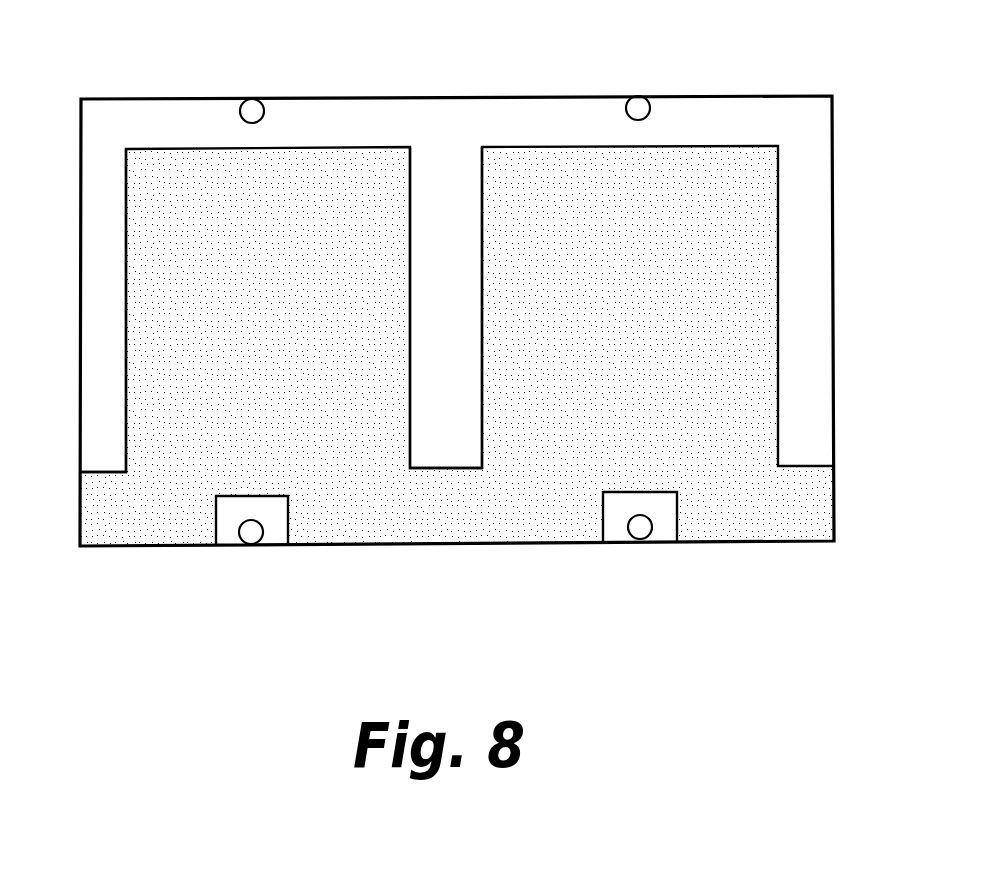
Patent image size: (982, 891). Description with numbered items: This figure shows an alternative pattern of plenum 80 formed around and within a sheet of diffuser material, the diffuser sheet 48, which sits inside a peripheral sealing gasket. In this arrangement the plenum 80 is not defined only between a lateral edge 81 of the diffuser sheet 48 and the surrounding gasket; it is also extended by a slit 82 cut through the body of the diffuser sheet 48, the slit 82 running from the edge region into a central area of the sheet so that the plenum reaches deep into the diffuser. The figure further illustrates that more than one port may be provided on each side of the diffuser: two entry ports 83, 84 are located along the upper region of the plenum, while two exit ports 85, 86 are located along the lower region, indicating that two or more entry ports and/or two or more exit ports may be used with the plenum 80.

The plenum 80 is at (95, 178).
The lateral edge 81 is at (126, 242).
The slit 82 is at (455, 301).
The entry port 83 is at (248, 108).
The entry port 84 is at (645, 103).
The exit port 85 is at (252, 538).
The exit port 86 is at (643, 535).
The diffuser sheet 48 is at (190, 457).